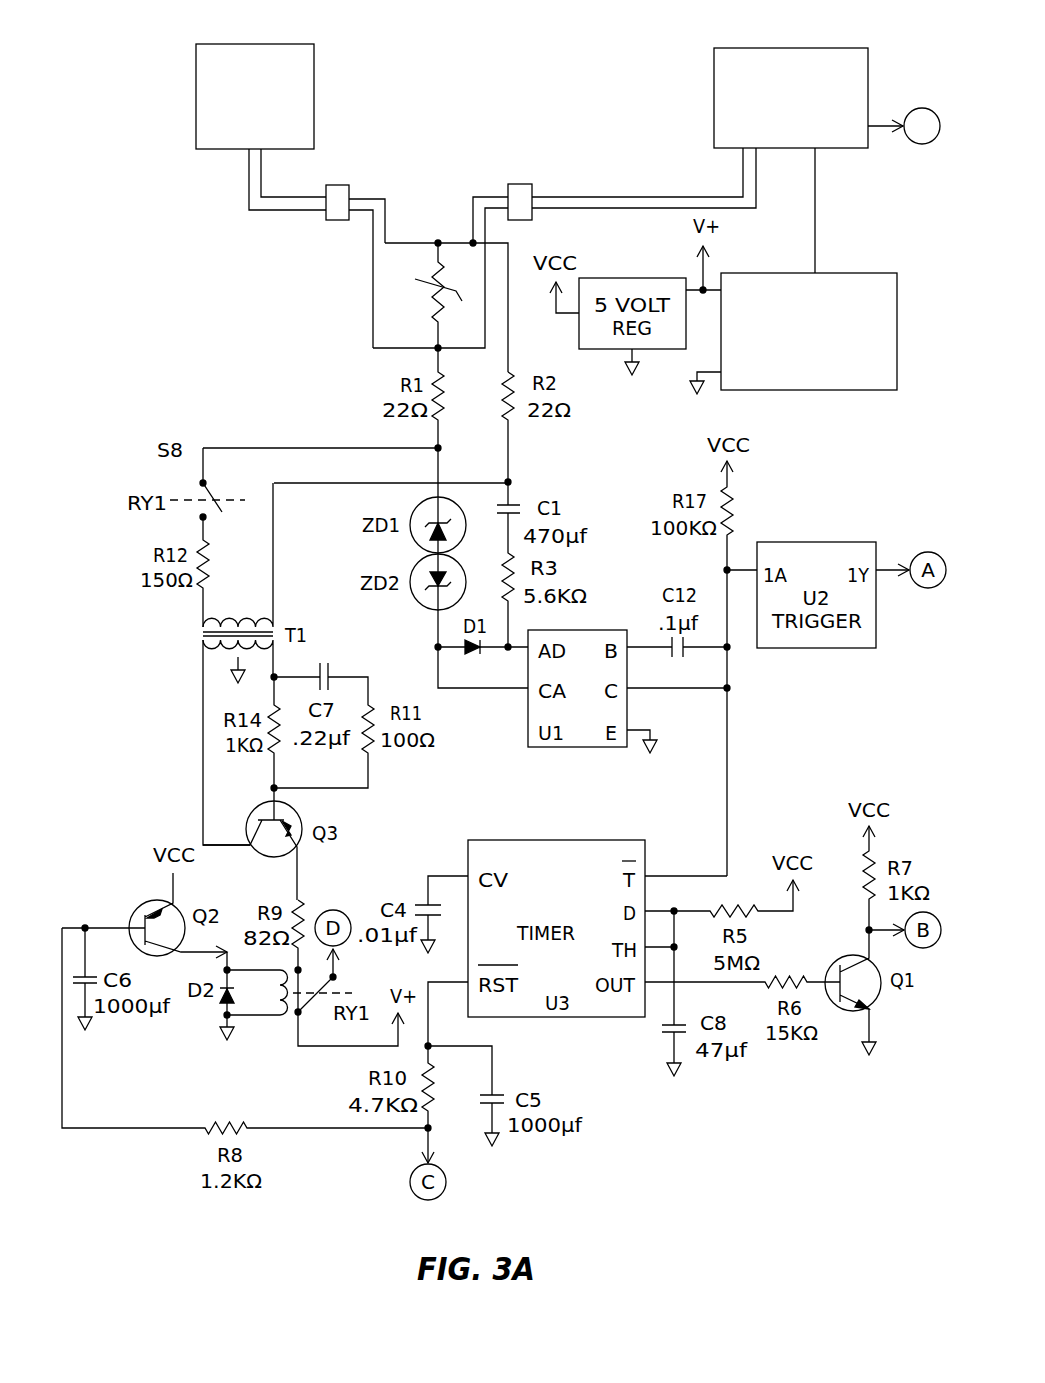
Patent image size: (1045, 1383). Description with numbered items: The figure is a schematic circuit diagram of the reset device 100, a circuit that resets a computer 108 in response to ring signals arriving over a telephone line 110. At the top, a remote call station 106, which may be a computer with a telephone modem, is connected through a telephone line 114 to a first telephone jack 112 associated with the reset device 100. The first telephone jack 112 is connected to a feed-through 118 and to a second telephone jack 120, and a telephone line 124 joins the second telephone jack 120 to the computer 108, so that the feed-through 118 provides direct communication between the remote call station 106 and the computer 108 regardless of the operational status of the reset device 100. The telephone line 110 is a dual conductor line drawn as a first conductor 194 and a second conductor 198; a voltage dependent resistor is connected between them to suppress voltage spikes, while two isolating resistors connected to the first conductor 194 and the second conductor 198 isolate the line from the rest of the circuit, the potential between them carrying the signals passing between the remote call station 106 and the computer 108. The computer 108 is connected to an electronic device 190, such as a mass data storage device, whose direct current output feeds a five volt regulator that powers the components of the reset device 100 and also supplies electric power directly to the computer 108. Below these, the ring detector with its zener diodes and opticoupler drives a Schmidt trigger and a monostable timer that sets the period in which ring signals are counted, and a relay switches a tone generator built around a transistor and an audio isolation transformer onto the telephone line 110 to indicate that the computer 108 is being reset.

The reset device 100 is at (578, 53).
The remote call station 106 is at (196, 96).
The computer 108 is at (788, 48).
The telephone line 110 is at (576, 182).
The first telephone jack 112 is at (338, 222).
The telephone line 114 is at (247, 182).
The feed-through 118 is at (390, 195).
The second telephone jack 120 is at (519, 182).
The telephone line 124 is at (641, 192).
The electronic device 190 is at (811, 390).
The first conductor 194 is at (373, 291).
The second conductor 198 is at (387, 218).